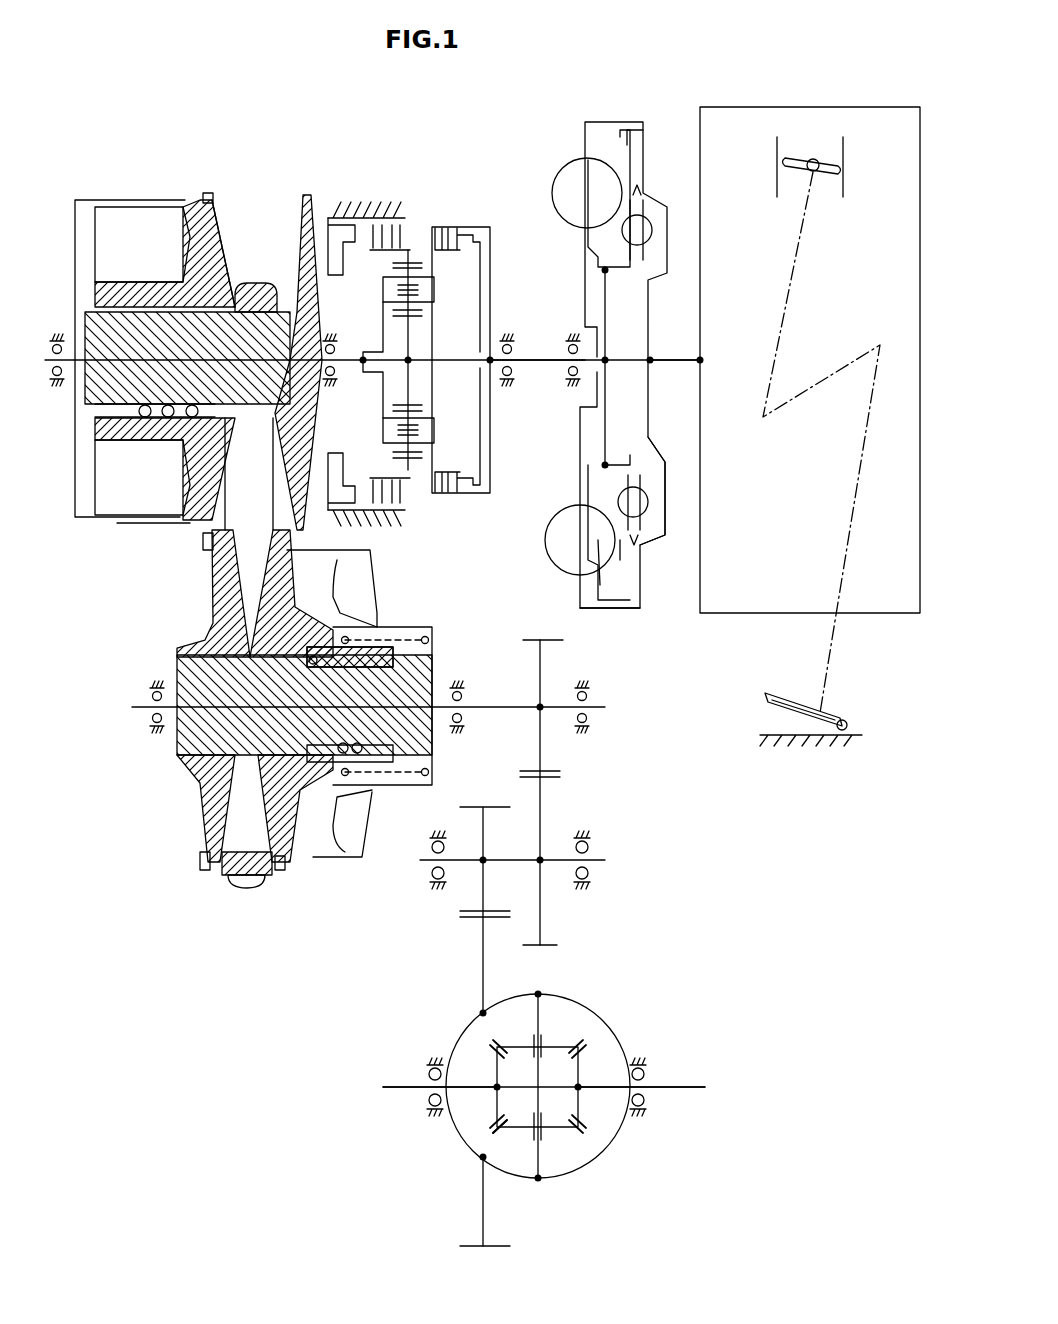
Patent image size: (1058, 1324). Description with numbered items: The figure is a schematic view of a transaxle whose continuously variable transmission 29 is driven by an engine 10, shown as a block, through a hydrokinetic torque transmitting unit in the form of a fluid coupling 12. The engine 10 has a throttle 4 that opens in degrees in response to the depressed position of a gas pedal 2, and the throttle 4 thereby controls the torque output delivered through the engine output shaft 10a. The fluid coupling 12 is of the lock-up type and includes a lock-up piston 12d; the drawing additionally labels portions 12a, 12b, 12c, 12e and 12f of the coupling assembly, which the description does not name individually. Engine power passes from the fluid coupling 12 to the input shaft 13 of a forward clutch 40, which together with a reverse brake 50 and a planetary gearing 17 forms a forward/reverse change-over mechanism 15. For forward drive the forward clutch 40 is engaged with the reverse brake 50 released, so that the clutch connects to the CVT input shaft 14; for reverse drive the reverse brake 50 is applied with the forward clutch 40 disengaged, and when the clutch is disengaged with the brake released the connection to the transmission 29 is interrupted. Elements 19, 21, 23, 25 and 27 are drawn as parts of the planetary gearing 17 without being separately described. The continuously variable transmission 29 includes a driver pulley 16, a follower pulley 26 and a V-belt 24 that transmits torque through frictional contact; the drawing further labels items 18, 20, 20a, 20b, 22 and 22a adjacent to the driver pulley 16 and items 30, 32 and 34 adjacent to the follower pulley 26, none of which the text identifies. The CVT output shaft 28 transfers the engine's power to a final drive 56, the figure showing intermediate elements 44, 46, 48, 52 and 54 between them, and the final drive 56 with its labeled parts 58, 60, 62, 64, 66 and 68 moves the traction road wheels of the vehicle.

The gas pedal 2 is at (832, 720).
The throttle 4 is at (813, 158).
The engine 10 is at (782, 107).
The engine output shaft 10a is at (669, 372).
The fluid coupling 12 is at (611, 118).
The pump housing portion 12a is at (640, 447).
The pump chamber 12b is at (560, 524).
The pump port 12c is at (578, 528).
The lock-up piston 12d is at (655, 155).
The pump housing portion 12e is at (645, 135).
The pump housing bottom 12f is at (631, 612).
The input shaft 13 is at (530, 366).
The CVT input shaft 14 is at (353, 366).
The forward/reverse change-over mechanism 15 is at (381, 176).
The driver pulley 16 is at (302, 182).
The planetary gearing 17 is at (446, 297).
The flywheel rotor 18 is at (308, 210).
The carrier shaft 19 is at (410, 380).
The electromagnetic clutch housing 20 is at (118, 215).
The clutch housing lower portion 20a is at (84, 523).
The clutch housing hub 20b is at (192, 205).
The sun gear 21 is at (420, 415).
The clutch ring 22 is at (210, 195).
The clutch ring edge 22a is at (216, 213).
The planetary gear 23 is at (420, 452).
The V-belt 24 is at (215, 522).
The carrier 25 is at (382, 402).
The follower pulley 26 is at (239, 887).
The ring gear 27 is at (416, 462).
The CVT output shaft 28 is at (503, 709).
The continuously variable transmission 29 is at (192, 631).
The rotor 30 is at (213, 802).
The stator 32 is at (320, 848).
The rotor end plate 34 is at (276, 877).
The forward clutch 40 is at (461, 219).
The output shaft 44 is at (502, 1248).
The gear 46 is at (528, 640).
The gear 48 is at (540, 912).
The reverse brake 50 is at (413, 216).
The gear 52 is at (551, 860).
The gear 54 is at (478, 910).
The final drive 56 is at (614, 1010).
The differential gear 58 is at (565, 1130).
The differential gear 60 is at (528, 1045).
The side gear 62 is at (492, 1117).
The side gear 64 is at (586, 1060).
The axle shaft 66 is at (389, 1088).
The axle shaft 68 is at (690, 1088).